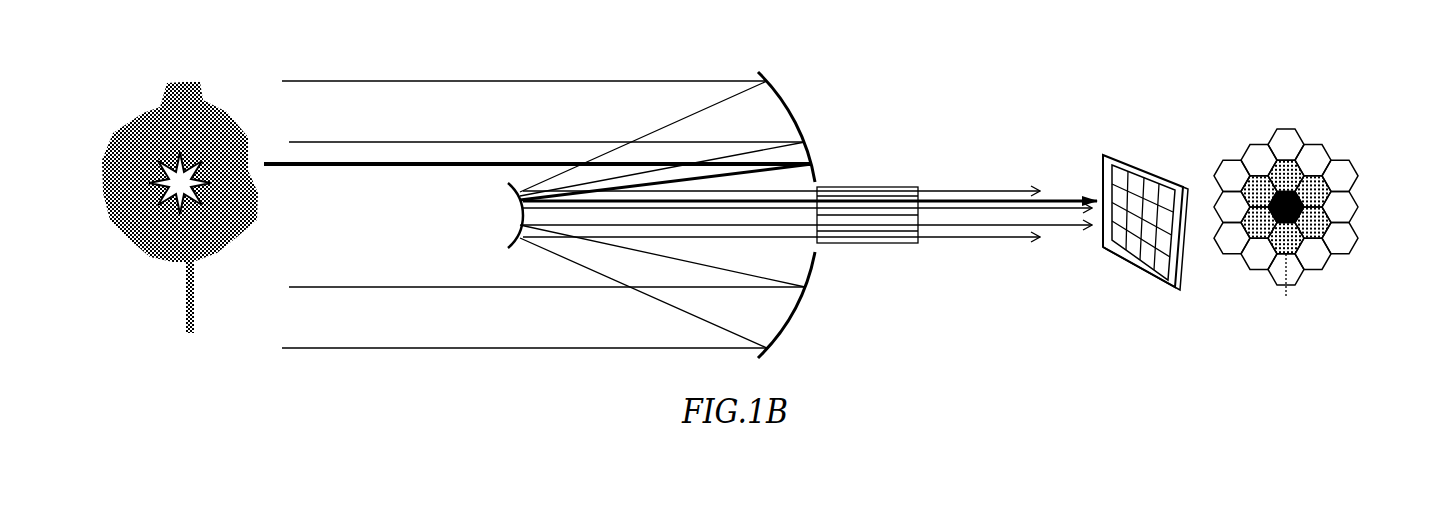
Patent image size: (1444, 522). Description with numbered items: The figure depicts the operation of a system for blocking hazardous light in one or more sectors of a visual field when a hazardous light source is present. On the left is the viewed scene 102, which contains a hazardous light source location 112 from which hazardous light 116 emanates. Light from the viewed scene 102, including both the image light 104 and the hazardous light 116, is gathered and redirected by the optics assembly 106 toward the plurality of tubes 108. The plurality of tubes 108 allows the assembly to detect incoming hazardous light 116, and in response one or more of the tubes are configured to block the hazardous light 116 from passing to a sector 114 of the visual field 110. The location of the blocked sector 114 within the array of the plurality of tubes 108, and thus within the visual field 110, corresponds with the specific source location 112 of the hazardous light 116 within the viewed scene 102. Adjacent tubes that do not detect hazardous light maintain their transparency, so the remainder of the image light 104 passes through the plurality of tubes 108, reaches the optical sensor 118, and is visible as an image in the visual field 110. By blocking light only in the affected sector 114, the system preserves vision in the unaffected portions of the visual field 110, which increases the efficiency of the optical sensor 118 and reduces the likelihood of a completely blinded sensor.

The viewed scene 102 is at (158, 92).
The image light 104 is at (562, 77).
The optics assembly 106 is at (818, 160).
The plurality of tubes 108 is at (907, 178).
The visual field 110 is at (1327, 123).
The hazardous light source location 112 is at (173, 190).
The blocked sector 114 is at (1310, 197).
The hazardous light 116 is at (1072, 195).
The optical sensor 118 is at (1173, 152).